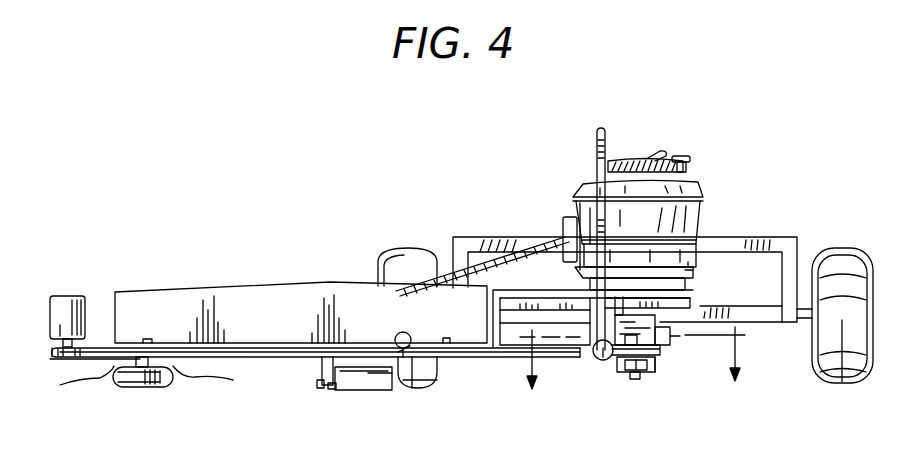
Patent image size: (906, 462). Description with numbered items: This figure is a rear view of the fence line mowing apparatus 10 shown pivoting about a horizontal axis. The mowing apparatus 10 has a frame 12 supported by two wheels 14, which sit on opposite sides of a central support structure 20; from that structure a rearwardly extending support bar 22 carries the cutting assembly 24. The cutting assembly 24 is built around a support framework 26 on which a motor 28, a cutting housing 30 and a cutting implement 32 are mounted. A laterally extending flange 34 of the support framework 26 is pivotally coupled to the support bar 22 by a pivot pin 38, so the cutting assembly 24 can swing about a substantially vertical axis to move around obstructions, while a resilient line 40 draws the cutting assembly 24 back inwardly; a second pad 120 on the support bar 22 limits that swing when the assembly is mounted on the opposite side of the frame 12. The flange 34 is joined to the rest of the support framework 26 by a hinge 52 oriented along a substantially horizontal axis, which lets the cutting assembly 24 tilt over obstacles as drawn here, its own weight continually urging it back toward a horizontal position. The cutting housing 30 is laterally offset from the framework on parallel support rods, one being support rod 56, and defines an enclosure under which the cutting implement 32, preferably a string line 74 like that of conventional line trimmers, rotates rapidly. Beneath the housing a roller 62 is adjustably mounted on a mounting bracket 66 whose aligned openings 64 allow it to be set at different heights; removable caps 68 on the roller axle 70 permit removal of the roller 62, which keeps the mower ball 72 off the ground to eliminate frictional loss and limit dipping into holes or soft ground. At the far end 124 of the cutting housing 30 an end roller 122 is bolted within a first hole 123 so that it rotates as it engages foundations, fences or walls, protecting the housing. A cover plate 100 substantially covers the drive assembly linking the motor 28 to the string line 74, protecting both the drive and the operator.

The mowing apparatus 10 is at (376, 193).
The frame 12 is at (752, 238).
The wheels 14 is at (827, 383).
The central support structure 20 is at (778, 323).
The rearwardly extending support bar 22 is at (656, 372).
The cutting assembly 24 is at (183, 289).
The support framework 26 is at (600, 128).
The motor 28 is at (690, 160).
The cutting housing 30 is at (258, 360).
The cutting implement 32 is at (176, 393).
The laterally extending flange 34 is at (629, 360).
The pivot pin 38 is at (660, 346).
The resilient line 40 is at (531, 249).
The hinge 52 is at (602, 362).
The support rod 56 is at (580, 356).
The roller 62 is at (381, 390).
The aligned openings 64 is at (321, 365).
The mounting bracket 66 is at (407, 376).
The removable caps 68 is at (320, 388).
The roller axle 70 is at (331, 390).
The mower ball 72 is at (127, 388).
The string line 74 is at (97, 380).
The cover plate 100 is at (283, 289).
The second pad 120 is at (672, 332).
The end roller 122 is at (66, 296).
The first hole 123 is at (82, 342).
The far end 124 is at (52, 358).